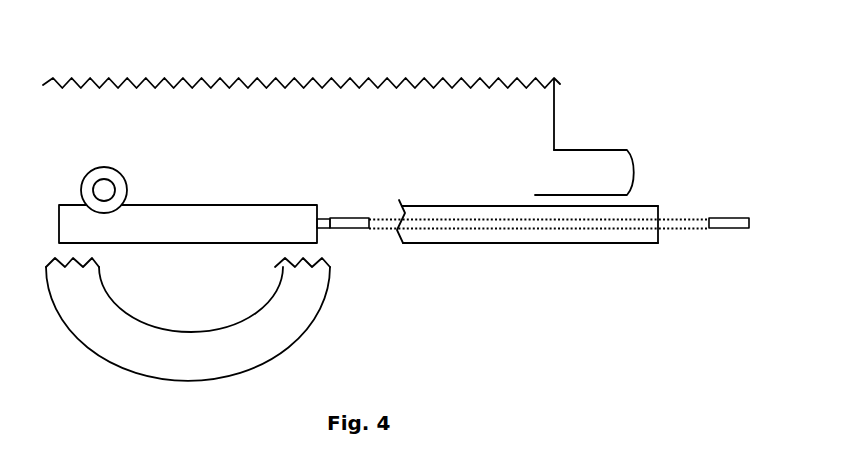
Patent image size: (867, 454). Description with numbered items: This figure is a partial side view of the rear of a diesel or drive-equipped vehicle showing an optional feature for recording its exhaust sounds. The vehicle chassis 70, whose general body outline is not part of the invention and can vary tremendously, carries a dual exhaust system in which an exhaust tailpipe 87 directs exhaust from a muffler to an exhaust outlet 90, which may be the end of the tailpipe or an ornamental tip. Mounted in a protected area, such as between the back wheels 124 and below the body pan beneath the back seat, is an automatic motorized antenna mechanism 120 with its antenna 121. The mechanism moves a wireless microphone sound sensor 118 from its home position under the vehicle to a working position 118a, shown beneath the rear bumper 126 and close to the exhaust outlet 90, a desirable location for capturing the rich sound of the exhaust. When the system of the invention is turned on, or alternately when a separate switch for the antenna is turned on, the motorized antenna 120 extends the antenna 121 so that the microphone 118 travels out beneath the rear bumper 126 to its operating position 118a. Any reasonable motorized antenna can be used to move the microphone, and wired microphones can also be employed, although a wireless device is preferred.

The vehicle chassis 70 is at (530, 115).
The exhaust tailpipe 87 is at (403, 243).
The exhaust outlet 90 is at (658, 206).
The sound sensor 118 is at (349, 225).
The wireless microphone in working position 118a is at (737, 225).
The automatic motorized antenna mechanism 120 is at (73, 215).
The antenna 121 is at (382, 230).
The back wheels 124 is at (267, 353).
The rear bumper 126 is at (583, 178).